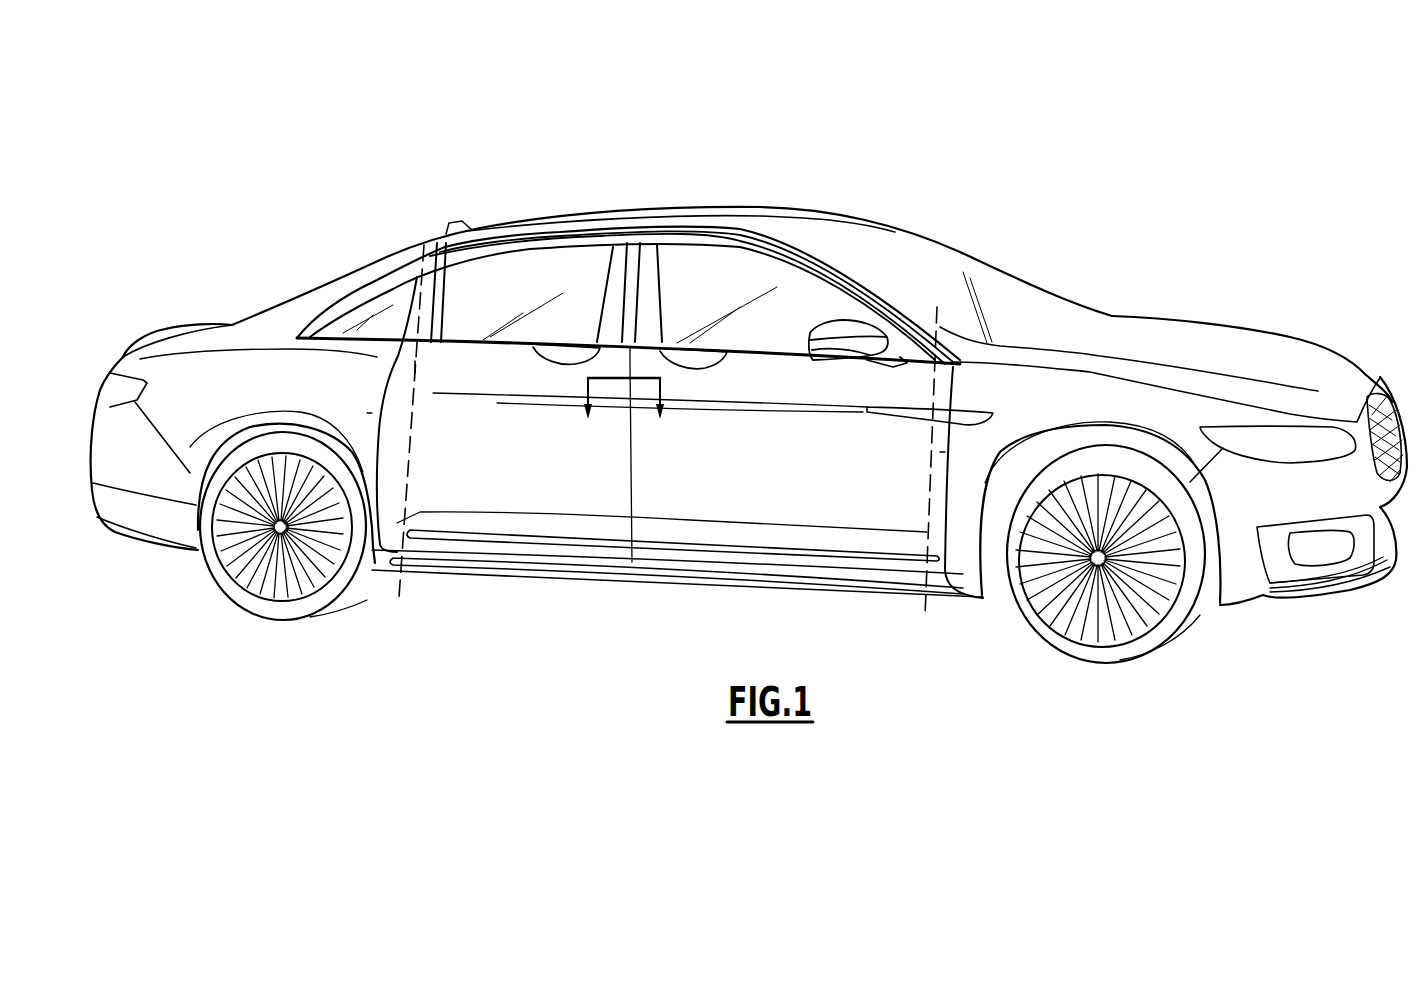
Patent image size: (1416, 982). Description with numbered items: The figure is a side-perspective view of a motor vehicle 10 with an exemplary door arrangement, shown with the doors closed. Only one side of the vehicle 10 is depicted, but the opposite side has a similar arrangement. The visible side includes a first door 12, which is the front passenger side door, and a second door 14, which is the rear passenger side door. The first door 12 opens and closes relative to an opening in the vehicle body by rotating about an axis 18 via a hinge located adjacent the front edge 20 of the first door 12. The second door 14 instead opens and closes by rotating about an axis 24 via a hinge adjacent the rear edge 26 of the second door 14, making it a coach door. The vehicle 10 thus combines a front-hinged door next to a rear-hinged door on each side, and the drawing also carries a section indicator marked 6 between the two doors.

The motor vehicle 10 is at (1352, 94).
The first door 12 is at (769, 232).
The second door 14 is at (526, 228).
The axis 18 is at (972, 398).
The front edge 20 is at (950, 455).
The axis 24 is at (415, 366).
The rear edge 26 is at (367, 413).
The section line 6 is at (624, 416).